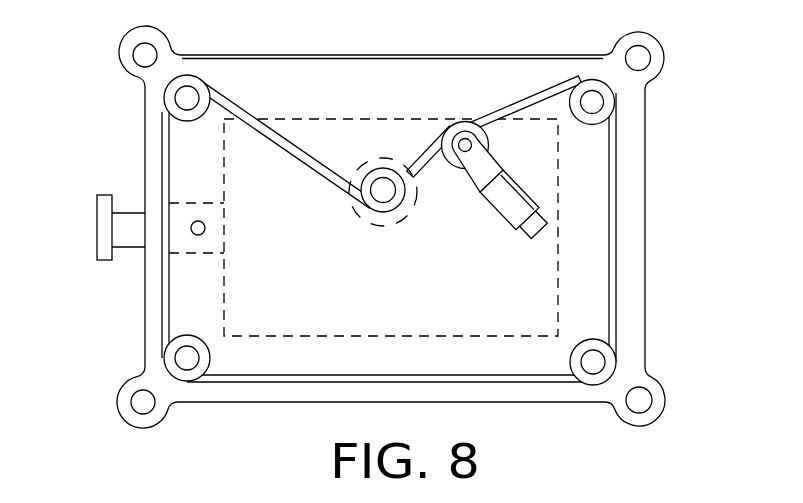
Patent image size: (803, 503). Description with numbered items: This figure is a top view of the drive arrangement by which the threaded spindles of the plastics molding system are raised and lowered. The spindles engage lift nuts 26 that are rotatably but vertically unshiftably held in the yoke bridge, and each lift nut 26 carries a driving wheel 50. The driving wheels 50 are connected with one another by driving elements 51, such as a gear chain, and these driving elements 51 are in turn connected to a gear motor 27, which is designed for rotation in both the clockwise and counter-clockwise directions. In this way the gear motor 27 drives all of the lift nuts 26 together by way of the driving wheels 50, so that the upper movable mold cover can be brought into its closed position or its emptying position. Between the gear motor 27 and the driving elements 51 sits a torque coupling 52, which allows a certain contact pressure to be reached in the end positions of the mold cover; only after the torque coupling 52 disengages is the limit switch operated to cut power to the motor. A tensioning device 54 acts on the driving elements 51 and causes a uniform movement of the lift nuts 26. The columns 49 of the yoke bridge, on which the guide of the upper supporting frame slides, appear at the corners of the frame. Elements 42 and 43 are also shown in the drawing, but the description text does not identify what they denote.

The lift nut 26 is at (594, 107).
The gear motor 27 is at (367, 160).
The knob 42 is at (142, 222).
The pin 43 is at (193, 233).
The column 49 is at (138, 62).
The driving wheel 50 is at (162, 130).
The driving element 51 is at (618, 177).
The torque coupling 52 is at (399, 158).
The tensioning device 54 is at (520, 183).